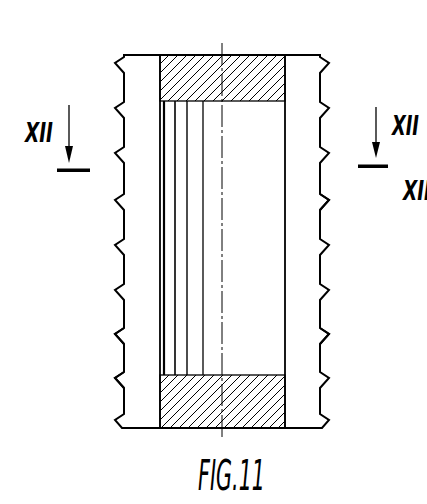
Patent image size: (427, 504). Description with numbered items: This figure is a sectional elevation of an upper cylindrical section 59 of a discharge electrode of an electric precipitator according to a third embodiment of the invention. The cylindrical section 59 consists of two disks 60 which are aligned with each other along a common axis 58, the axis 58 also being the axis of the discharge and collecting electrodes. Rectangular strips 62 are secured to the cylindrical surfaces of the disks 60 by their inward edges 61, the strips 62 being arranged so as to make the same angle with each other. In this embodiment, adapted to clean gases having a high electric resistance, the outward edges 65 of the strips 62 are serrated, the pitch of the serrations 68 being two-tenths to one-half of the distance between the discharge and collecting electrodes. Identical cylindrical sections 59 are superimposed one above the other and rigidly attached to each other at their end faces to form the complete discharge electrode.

The axis 58 is at (222, 143).
The cylindrical section 59 is at (177, 53).
The disk 60 is at (268, 63).
The inward edge 61 is at (178, 262).
The rectangular strip 62 is at (137, 259).
The outward edge 65 is at (124, 350).
The serration 68 is at (121, 380).